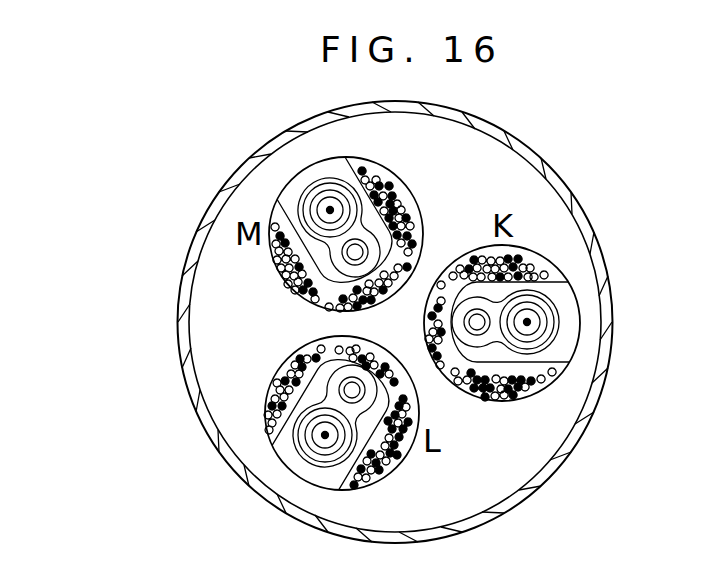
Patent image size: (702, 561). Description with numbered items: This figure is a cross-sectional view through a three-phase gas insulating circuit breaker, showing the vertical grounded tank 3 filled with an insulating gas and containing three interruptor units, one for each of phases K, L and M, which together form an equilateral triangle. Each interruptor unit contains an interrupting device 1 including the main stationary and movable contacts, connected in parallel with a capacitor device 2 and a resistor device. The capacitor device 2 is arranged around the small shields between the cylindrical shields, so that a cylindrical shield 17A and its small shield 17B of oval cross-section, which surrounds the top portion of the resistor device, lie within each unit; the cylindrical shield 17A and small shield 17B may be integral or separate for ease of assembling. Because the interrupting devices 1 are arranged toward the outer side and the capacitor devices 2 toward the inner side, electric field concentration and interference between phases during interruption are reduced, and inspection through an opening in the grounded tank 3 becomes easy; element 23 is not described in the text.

The interrupting device 1 is at (304, 423).
The capacitor device 2 is at (288, 359).
The grounded tank 3 is at (186, 378).
The cylindrical shield 17A is at (266, 424).
The small shield 17B is at (297, 455).
The insulation covering 23 is at (368, 404).